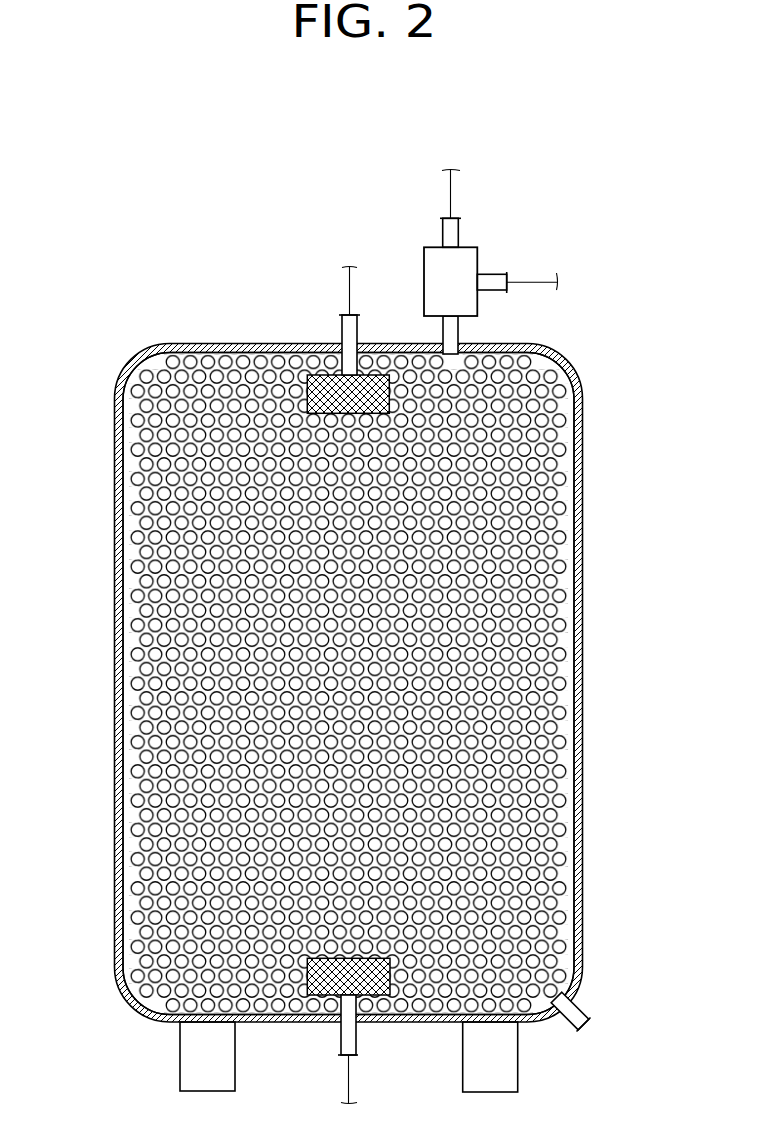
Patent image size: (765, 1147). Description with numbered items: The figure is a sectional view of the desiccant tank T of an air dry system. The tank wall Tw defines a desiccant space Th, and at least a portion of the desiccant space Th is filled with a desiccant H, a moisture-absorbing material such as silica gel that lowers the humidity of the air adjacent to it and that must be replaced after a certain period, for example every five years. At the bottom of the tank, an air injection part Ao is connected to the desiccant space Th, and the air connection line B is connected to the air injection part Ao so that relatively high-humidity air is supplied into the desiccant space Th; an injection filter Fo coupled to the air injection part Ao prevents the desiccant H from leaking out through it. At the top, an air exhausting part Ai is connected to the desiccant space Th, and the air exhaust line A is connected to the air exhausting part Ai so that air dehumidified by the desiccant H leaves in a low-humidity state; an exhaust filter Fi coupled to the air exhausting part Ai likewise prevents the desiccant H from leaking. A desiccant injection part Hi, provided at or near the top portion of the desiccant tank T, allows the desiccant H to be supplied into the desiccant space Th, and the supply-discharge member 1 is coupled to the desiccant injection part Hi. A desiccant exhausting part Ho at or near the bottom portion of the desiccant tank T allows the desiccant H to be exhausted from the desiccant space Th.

The supply-discharge member 1 is at (477, 231).
The desiccant tank T is at (317, 611).
The tank wall Tw is at (120, 595).
The desiccant space Th is at (133, 638).
The desiccant H is at (138, 683).
The air exhaust line A is at (343, 287).
The air exhausting part Ai is at (348, 328).
The exhaust filter Fi is at (375, 380).
The desiccant injection part Hi is at (455, 328).
The air injection part Ao is at (348, 1040).
The air connection line B is at (343, 1077).
The injection filter Fo is at (374, 988).
The desiccant exhausting part Ho is at (572, 1011).